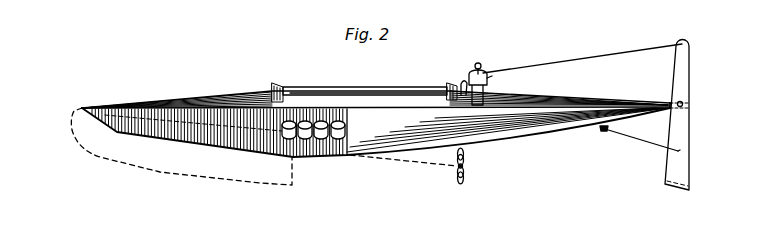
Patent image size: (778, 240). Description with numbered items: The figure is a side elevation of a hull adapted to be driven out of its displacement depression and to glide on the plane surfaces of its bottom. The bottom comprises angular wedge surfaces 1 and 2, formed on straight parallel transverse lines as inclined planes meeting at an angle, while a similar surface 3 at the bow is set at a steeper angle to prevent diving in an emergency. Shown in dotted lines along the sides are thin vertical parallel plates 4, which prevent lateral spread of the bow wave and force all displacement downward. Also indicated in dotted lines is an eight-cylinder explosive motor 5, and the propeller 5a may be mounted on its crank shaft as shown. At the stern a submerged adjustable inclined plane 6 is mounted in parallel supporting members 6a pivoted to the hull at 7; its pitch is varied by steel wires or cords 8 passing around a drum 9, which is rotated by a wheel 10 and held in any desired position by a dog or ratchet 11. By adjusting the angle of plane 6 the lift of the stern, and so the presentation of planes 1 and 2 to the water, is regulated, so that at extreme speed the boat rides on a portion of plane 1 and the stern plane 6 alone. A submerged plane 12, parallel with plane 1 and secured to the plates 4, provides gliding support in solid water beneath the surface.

The angular wedge surface 1 is at (237, 148).
The angular wedge surface 2 is at (328, 158).
The bow surface 3 is at (190, 115).
The vertical parallel plates 4 is at (177, 160).
The explosive motor 5 is at (312, 158).
The propeller 5a is at (466, 174).
The submerged adjustable inclined plane 6 is at (673, 189).
The parallel supporting members 6a is at (689, 150).
The pivot 7 is at (684, 103).
The steel wires or cords 8 is at (597, 57).
The drum 9 is at (489, 79).
The wheel 10 is at (480, 66).
The dog or ratchet 11 is at (462, 83).
The submerged plane 12 is at (290, 186).